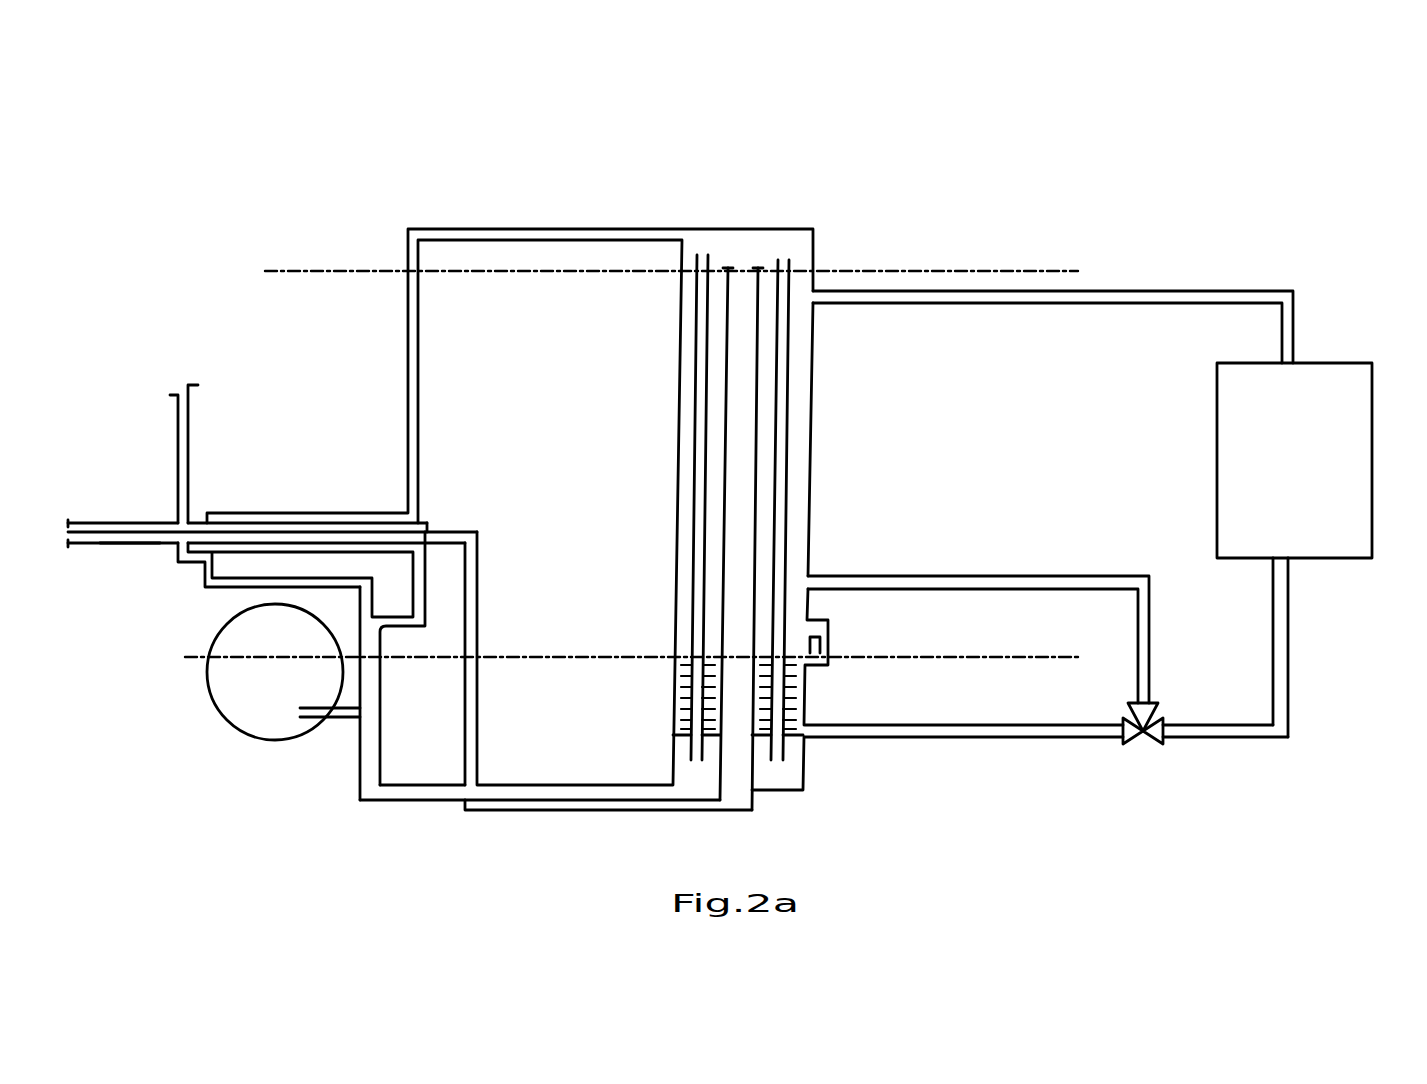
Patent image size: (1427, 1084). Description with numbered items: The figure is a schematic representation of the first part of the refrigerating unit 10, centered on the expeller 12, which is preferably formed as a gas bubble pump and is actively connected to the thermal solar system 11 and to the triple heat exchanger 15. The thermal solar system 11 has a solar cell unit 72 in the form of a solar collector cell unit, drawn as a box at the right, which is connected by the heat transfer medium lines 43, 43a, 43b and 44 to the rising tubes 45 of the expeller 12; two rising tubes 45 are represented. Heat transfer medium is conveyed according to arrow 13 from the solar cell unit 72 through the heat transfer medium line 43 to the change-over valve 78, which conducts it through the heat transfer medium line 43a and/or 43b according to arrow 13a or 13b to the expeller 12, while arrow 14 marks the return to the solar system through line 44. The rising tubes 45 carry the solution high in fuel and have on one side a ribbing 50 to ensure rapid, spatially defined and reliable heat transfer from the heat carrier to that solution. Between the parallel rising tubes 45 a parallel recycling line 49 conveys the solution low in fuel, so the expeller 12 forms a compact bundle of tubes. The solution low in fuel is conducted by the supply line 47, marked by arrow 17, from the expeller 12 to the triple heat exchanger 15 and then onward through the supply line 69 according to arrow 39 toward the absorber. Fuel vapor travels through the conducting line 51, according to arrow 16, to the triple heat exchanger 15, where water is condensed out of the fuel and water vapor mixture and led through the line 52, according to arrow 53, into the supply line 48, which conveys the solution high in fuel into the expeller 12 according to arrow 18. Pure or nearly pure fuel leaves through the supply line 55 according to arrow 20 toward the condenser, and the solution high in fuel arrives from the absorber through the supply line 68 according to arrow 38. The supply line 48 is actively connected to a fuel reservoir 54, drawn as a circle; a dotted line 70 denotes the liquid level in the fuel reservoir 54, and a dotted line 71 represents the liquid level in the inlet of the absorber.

The refrigerating unit 10 is at (790, 175).
The thermal solar system 11 is at (1350, 580).
The expeller 12 is at (948, 488).
The arrow for heat transfer medium flow 13 is at (1262, 615).
The arrow for heat transfer medium flow through line 43a 13a is at (952, 715).
The arrow for heat transfer medium flow through line 43b 13b is at (853, 599).
The arrow for heat transfer medium line 14 is at (903, 313).
The triple heat exchanger 15 is at (277, 473).
The arrow for fuel vapor supply line 16 is at (667, 250).
The arrow for low-fuel solution supply line 17 is at (490, 550).
The arrow for high-fuel solution supply line 18 is at (437, 565).
The arrow for fuel vapor supply line to condenser 20 is at (206, 458).
The arrow for high-fuel solution supply line from absorber 38 is at (165, 516).
The arrow for low-fuel solution supply line to absorber 39 is at (128, 560).
The heat transfer medium line 43 is at (1283, 688).
The heat transfer medium line 43a is at (987, 732).
The heat transfer medium line 43b is at (1013, 572).
The heat transfer medium line 44 is at (957, 295).
The rising tubes 45 is at (696, 465).
The supply line 47 is at (485, 538).
The supply line 48 is at (418, 617).
The recycling line 49 is at (747, 558).
The ribbing 50 is at (685, 688).
The conducting line 51 is at (614, 230).
The line 52 is at (205, 585).
The arrow 53 is at (288, 597).
The fuel reservoir 54 is at (232, 700).
The supply line 55 is at (189, 477).
The supply line 68 is at (95, 521).
The supply line 69 is at (158, 553).
The dotted line 70 is at (998, 657).
The dotted line 71 is at (310, 268).
The solar cell unit 72 is at (1330, 340).
The change-over valve 78 is at (1138, 745).